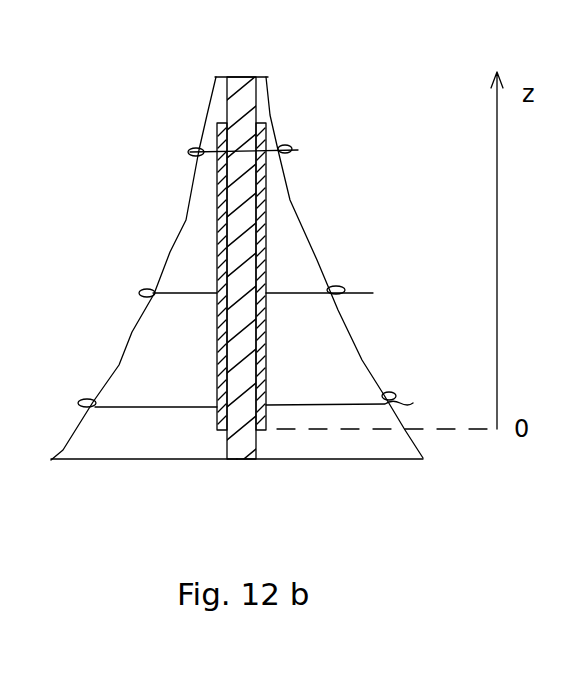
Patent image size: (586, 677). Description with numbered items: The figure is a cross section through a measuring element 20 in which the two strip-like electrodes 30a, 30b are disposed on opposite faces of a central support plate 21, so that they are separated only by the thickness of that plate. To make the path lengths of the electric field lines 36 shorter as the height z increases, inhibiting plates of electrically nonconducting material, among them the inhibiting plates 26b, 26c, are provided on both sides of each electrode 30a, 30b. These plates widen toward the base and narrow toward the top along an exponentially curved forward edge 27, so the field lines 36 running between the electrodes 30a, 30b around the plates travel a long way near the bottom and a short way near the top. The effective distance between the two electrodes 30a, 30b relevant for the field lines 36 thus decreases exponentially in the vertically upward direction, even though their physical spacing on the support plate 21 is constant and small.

The measuring element 20 is at (381, 94).
The support plate 21 is at (240, 93).
The forward edge 27 is at (132, 330).
The electrode 30a is at (266, 242).
The electrode 30b is at (217, 246).
The electric field lines 36 is at (269, 276).
The inhibiting plate 26b is at (343, 452).
The inhibiting plate 26c is at (122, 447).